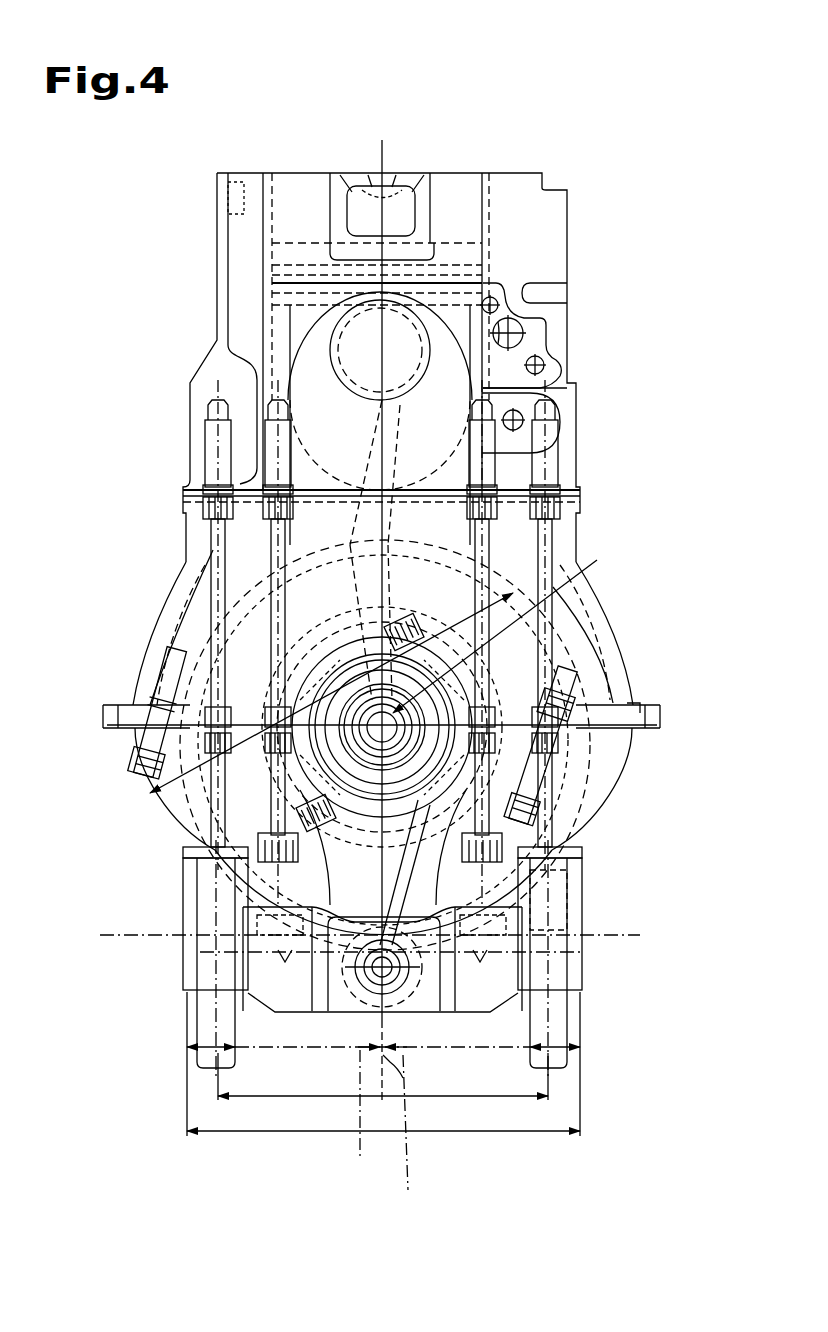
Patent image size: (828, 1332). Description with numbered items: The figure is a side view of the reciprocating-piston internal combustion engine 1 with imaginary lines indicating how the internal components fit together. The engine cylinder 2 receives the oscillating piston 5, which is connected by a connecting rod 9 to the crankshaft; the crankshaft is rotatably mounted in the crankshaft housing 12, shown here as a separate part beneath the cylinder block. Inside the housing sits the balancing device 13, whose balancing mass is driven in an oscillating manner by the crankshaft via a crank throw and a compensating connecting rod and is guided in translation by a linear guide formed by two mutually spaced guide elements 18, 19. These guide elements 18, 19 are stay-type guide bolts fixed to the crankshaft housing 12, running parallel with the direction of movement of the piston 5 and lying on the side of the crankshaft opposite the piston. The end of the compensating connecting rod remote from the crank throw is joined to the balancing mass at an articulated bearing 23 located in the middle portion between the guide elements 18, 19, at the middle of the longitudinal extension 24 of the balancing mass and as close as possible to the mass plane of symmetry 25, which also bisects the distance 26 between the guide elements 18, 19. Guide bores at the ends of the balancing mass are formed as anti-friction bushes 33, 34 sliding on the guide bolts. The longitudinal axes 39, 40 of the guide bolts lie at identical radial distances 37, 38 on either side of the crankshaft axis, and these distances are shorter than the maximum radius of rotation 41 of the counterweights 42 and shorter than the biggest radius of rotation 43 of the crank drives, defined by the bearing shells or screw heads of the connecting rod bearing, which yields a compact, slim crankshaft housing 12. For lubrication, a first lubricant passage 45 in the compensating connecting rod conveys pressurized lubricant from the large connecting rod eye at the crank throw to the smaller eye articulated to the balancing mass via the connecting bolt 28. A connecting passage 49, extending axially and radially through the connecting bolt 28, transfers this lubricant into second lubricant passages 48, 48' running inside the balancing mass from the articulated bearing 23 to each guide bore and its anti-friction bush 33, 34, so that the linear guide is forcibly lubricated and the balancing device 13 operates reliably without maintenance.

The reciprocating-piston internal combustion engine 1 is at (594, 143).
The engine cylinder 2 is at (567, 321).
The piston 5 is at (305, 245).
The connecting rod 9 is at (333, 452).
The crankshaft housing 12 is at (165, 610).
The balancing device 13 is at (160, 983).
The guide element 18 is at (185, 1048).
The guide element 19 is at (582, 1048).
The bearing 23 is at (320, 1024).
The longitudinal extension 24 is at (245, 1133).
The mass plane of symmetry 25 is at (412, 1136).
The distance 26 is at (478, 1098).
The connecting bolt 28 is at (384, 1068).
The anti-friction bush 33 is at (176, 855).
The anti-friction bush 34 is at (582, 848).
The radial distance 37 is at (330, 1052).
The radial distance 38 is at (508, 1050).
The guide or longitudinal axis 39 is at (175, 1020).
The guide or longitudinal axis 40 is at (582, 1018).
The maximum radius of rotation 41 is at (597, 560).
The counterweight 42 is at (554, 542).
The biggest radius of rotation 43 is at (163, 793).
The lubricant passage 45 is at (582, 886).
The second lubricant passage 48 is at (140, 960).
The second lubricant passage 48' is at (627, 960).
The connecting passage 49 is at (357, 1119).